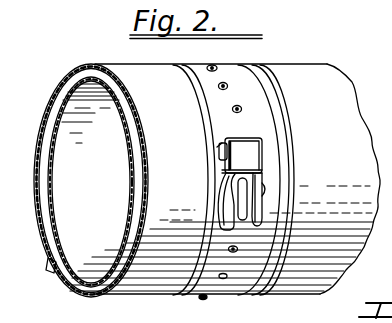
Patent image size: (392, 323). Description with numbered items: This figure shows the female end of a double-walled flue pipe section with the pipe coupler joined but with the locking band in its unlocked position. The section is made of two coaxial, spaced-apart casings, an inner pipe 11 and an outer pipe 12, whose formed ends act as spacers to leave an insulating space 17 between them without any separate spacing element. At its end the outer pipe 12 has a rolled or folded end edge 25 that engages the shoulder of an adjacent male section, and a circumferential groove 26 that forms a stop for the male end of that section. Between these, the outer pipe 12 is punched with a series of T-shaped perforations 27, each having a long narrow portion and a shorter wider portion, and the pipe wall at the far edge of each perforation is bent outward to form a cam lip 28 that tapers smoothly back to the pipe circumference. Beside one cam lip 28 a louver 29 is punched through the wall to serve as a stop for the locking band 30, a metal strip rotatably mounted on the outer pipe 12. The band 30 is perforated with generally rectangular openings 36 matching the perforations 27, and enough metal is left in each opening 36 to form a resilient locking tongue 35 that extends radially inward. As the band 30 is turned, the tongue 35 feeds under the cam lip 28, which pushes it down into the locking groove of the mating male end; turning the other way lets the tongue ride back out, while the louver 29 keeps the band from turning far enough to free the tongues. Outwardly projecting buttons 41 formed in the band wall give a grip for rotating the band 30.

The inner pipe 11 is at (64, 100).
The outer pipe 12 is at (90, 70).
The insulating space 17 is at (45, 134).
The rolled end edge 25 is at (201, 110).
The circumferential groove 26 is at (284, 115).
The T-shaped perforation 27 is at (259, 190).
The cam lip 28 is at (247, 164).
The louver 29 is at (228, 142).
The locking band 30 is at (237, 89).
The locking tongue 35 is at (222, 213).
The rectangular opening 36 is at (222, 150).
The button 41 is at (212, 66).